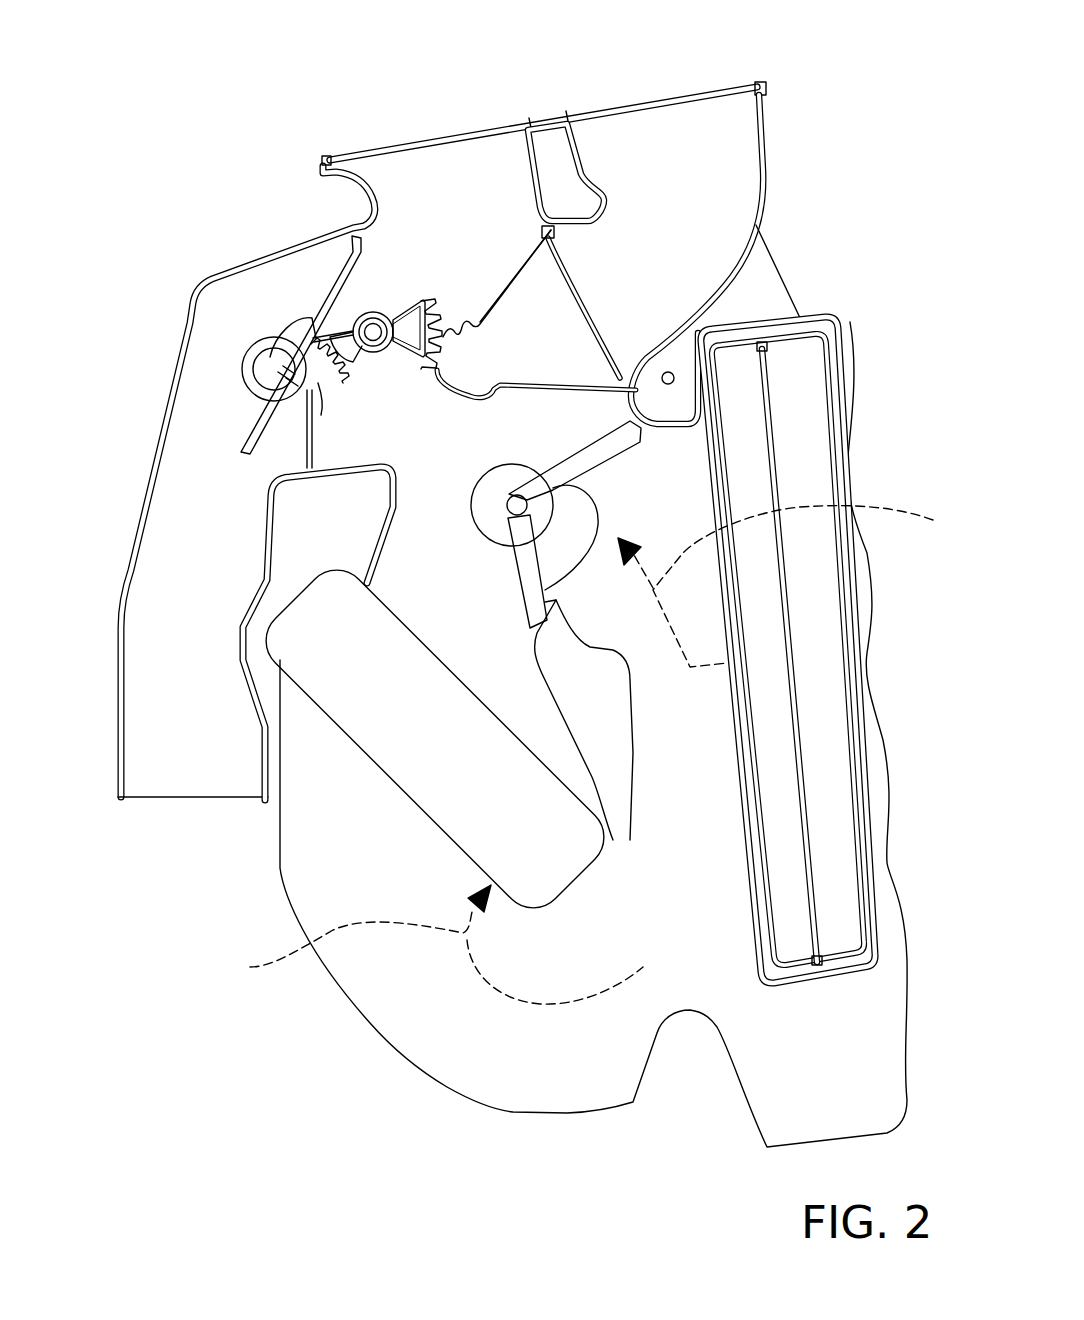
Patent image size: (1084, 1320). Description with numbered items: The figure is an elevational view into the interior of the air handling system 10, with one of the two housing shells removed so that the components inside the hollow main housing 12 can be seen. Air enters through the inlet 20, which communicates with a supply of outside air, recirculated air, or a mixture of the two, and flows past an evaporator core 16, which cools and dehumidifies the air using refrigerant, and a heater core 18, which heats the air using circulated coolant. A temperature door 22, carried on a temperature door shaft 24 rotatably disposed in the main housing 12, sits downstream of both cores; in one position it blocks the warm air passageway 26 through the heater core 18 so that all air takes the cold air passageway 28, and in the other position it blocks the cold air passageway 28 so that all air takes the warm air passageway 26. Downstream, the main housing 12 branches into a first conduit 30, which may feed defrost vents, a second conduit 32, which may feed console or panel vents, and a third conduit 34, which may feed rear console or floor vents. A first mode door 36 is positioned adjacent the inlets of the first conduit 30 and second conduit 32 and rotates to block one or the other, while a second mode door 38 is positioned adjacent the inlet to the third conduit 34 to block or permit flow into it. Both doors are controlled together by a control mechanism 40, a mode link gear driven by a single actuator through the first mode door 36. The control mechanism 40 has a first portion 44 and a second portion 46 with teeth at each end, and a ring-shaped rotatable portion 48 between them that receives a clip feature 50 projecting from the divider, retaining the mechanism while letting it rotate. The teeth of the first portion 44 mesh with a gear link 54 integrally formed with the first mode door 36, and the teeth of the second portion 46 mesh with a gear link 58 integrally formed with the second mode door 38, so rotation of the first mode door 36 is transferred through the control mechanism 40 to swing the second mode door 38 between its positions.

The air handling system 10 is at (870, 38).
The main housing 12 is at (190, 288).
The evaporator core 16 is at (830, 682).
The heater core 18 is at (457, 797).
The inlet 20 is at (873, 550).
The temperature door 22 is at (495, 478).
The temperature door shaft 24 is at (512, 505).
The warm air passageway 26 is at (429, 944).
The cold air passageway 28 is at (789, 586).
The first conduit 30 is at (705, 152).
The second conduit 32 is at (427, 207).
The third conduit 34 is at (177, 670).
The first mode door 36 is at (545, 313).
The second mode door 38 is at (296, 330).
The control mechanism 40 is at (380, 300).
The first portion 44 is at (420, 300).
The second portion 46 is at (338, 318).
The rotatable portion 48 is at (387, 350).
The clip feature 50 is at (362, 346).
The gear link 54 is at (465, 365).
The gear link 58 is at (318, 390).